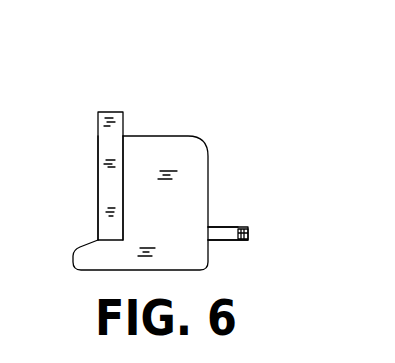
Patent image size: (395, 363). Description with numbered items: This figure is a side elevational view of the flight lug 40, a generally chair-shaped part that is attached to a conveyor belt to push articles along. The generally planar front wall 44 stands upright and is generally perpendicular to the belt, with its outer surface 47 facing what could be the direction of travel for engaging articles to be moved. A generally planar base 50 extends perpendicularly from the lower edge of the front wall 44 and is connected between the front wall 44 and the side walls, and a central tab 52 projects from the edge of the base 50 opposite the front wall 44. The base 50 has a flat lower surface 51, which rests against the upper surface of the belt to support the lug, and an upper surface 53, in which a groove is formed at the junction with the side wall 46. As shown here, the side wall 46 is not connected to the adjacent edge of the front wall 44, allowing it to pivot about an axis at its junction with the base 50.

The flight lug 40 is at (180, 124).
The front wall 44 is at (108, 112).
The side wall 46 is at (198, 186).
The outer surface 47 is at (98, 160).
The base 50 is at (226, 237).
The lower surface 51 is at (233, 241).
The central tab 52 is at (249, 237).
The upper surface 53 is at (227, 227).